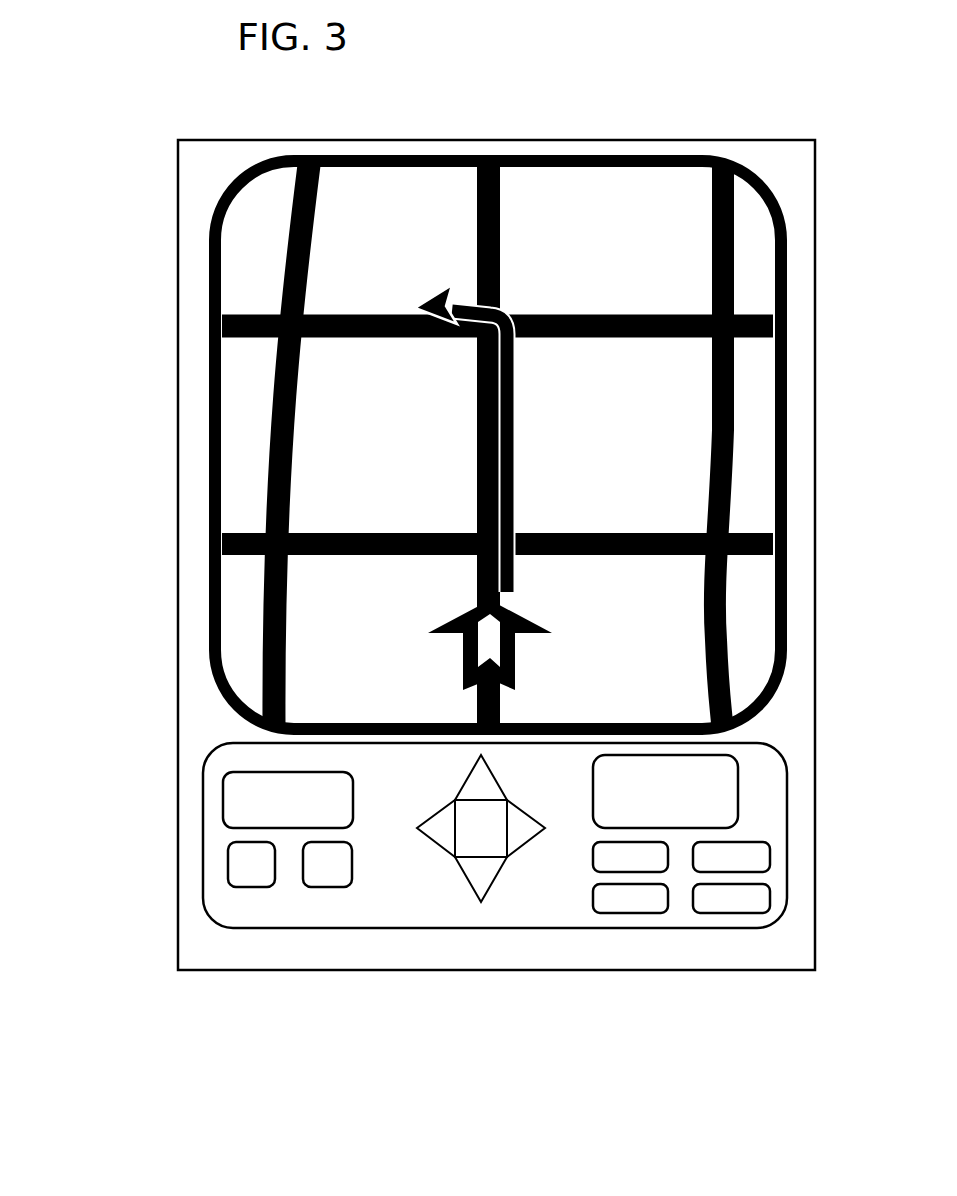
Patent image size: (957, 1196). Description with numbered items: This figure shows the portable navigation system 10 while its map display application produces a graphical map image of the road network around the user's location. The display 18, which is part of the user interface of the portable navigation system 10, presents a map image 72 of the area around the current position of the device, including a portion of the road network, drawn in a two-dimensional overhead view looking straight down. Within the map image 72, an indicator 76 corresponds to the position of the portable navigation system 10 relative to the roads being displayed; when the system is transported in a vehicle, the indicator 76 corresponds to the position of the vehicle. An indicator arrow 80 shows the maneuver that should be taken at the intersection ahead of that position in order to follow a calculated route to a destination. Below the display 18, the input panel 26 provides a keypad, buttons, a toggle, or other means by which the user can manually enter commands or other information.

The portable navigation system 10 is at (495, 137).
The display 18 is at (248, 612).
The map image 72 is at (263, 213).
The indicator arrow 80 is at (512, 425).
The indicator 76 is at (463, 668).
The input panel 26 is at (368, 903).